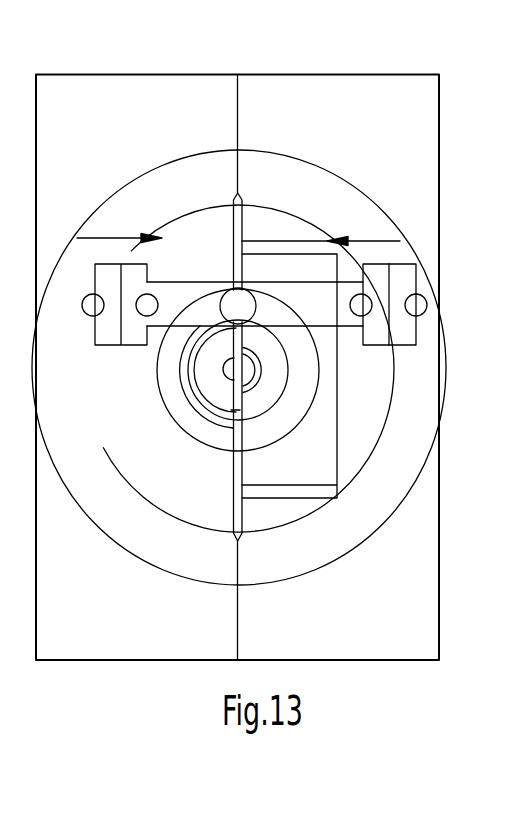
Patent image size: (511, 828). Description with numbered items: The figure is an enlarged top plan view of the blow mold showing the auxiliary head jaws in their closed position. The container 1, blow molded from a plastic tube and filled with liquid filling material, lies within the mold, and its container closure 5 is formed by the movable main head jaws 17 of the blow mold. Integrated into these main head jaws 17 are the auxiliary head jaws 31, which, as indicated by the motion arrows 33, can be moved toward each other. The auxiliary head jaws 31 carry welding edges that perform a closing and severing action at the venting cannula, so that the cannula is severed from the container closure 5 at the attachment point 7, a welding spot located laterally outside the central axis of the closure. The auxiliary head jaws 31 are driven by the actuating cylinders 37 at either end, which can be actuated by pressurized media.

The container 1 is at (393, 513).
The container closure 5 is at (270, 387).
The attachment point 7 is at (230, 300).
The main head jaws 17 is at (268, 110).
The auxiliary head jaws 31 is at (278, 297).
The motion arrows 33 is at (118, 238).
The actuating cylinders 37 is at (112, 323).